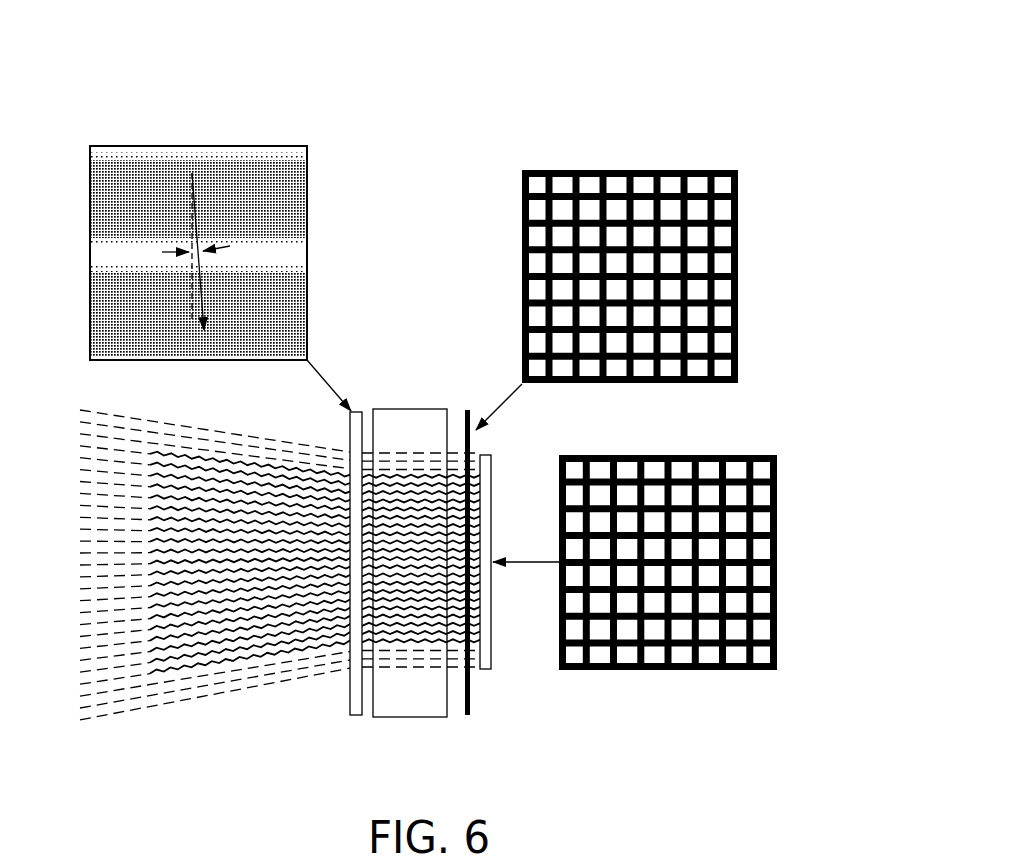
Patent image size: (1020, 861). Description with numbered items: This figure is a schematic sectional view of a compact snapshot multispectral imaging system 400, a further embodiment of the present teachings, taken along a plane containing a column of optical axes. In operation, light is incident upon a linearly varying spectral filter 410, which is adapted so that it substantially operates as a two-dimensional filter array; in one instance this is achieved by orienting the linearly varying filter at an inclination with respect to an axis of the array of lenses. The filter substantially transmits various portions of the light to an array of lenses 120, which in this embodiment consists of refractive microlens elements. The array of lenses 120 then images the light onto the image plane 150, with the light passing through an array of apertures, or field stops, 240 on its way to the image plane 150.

The compact snapshot multispectral imaging system 400 is at (218, 80).
The array of lenses 120 is at (392, 409).
The image plane 150 is at (486, 669).
The array of apertures 240 is at (467, 717).
The linearly varying spectral filter 410 is at (357, 717).